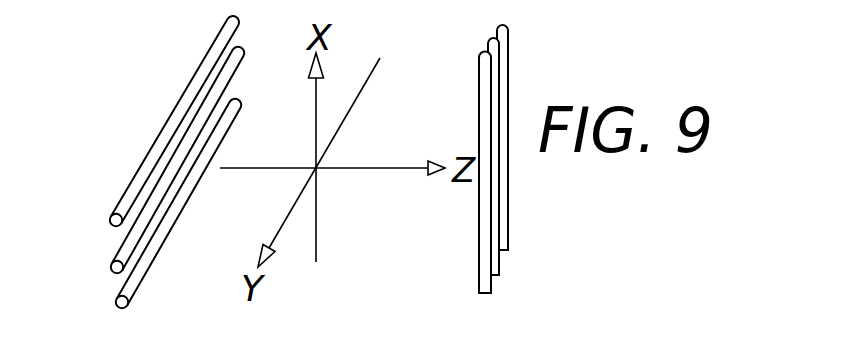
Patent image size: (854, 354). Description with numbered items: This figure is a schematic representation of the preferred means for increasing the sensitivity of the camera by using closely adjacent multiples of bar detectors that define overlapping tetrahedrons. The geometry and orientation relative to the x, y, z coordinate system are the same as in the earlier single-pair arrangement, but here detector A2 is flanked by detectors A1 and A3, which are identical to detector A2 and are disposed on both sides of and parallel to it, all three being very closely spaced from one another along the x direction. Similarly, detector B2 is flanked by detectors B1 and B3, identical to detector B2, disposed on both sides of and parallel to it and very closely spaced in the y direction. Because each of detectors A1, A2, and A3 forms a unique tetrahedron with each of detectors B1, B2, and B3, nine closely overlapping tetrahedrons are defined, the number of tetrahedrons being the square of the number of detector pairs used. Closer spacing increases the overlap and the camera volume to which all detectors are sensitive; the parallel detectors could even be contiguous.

The detector A1 is at (116, 302).
The detector A2 is at (111, 267).
The detector A3 is at (112, 215).
The detector B1 is at (480, 58).
The detector B2 is at (487, 40).
The detector B3 is at (505, 23).